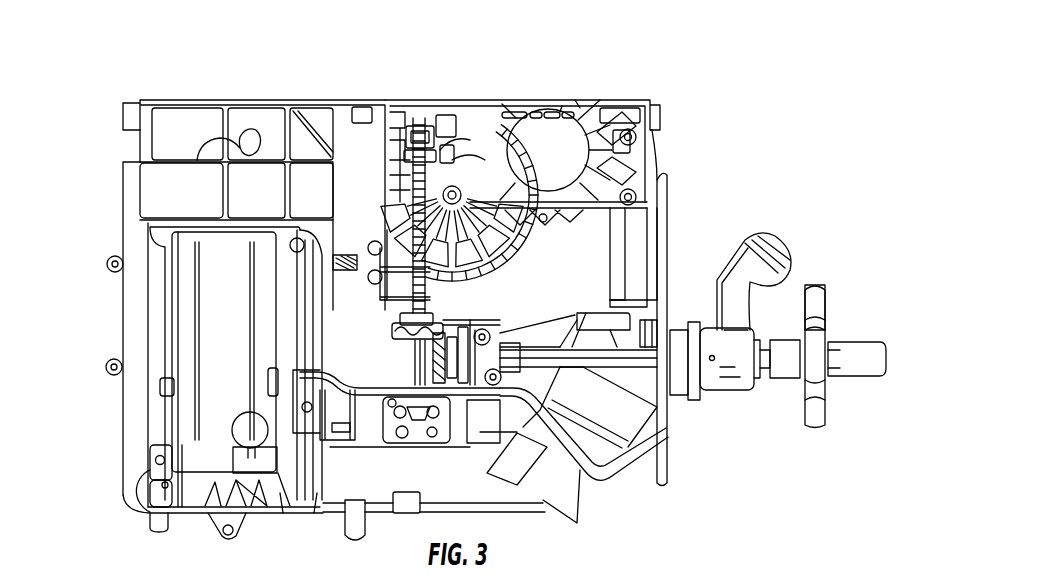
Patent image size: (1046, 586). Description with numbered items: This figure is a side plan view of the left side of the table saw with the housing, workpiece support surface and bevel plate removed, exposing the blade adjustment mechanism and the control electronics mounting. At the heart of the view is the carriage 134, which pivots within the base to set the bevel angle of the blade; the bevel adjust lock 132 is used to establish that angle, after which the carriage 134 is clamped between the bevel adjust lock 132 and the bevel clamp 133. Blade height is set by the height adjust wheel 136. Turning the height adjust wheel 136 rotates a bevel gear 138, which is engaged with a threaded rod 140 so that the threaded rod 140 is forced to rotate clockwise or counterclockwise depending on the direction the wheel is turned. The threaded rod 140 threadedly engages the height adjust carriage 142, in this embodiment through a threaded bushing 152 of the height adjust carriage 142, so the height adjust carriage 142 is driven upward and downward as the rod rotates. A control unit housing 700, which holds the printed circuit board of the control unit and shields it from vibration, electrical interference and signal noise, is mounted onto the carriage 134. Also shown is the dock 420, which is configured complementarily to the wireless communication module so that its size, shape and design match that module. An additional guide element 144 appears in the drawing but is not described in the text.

The control unit housing 700 is at (148, 292).
The dock 420 is at (242, 473).
The height adjust carriage 142 is at (578, 115).
The threaded rod 140 is at (390, 300).
The threaded bushing 152 is at (410, 132).
The bevel gear 138 is at (430, 313).
The mounting plate 144 is at (667, 197).
The bevel clamp 133 is at (686, 387).
The bevel adjust lock 132 is at (768, 238).
The height adjust wheel 136 is at (825, 290).
The carriage 134 is at (607, 463).